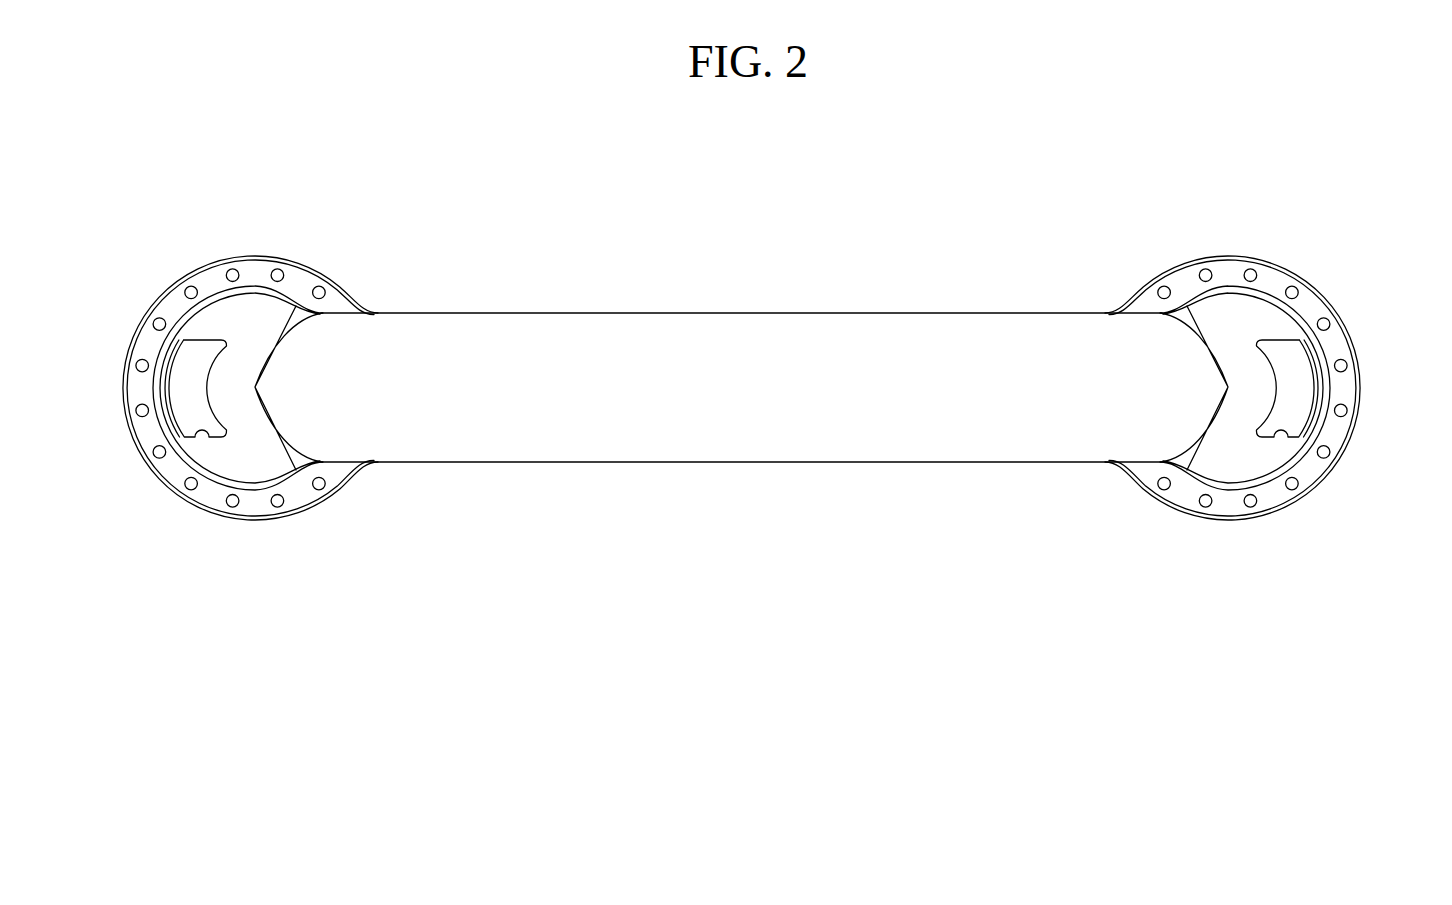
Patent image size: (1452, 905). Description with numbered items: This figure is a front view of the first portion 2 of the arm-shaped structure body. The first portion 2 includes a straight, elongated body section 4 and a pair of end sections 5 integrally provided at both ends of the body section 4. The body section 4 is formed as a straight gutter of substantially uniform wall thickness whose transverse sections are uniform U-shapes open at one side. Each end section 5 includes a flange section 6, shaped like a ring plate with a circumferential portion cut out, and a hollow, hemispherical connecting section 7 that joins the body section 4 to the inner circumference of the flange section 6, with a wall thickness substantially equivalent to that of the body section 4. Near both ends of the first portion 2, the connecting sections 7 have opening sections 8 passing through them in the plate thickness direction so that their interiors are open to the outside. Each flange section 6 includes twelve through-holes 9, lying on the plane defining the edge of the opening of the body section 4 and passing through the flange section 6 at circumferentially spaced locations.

The first portion 2 is at (612, 268).
The body section 4 is at (853, 352).
The end section 5 is at (200, 255).
The flange section 6 is at (143, 318).
The connecting section 7 is at (257, 330).
The opening section 8 is at (214, 434).
The through-hole 9 is at (278, 506).